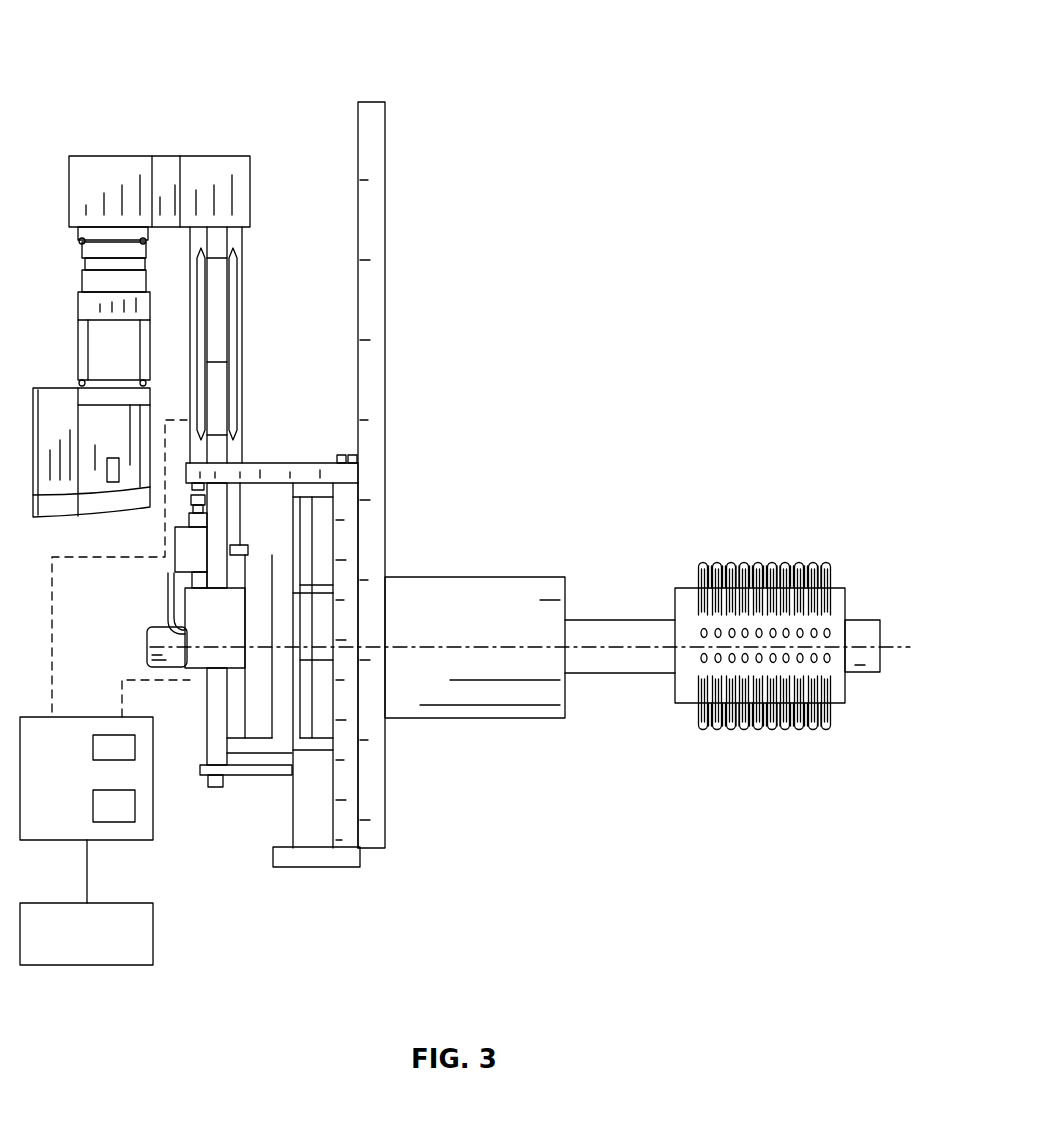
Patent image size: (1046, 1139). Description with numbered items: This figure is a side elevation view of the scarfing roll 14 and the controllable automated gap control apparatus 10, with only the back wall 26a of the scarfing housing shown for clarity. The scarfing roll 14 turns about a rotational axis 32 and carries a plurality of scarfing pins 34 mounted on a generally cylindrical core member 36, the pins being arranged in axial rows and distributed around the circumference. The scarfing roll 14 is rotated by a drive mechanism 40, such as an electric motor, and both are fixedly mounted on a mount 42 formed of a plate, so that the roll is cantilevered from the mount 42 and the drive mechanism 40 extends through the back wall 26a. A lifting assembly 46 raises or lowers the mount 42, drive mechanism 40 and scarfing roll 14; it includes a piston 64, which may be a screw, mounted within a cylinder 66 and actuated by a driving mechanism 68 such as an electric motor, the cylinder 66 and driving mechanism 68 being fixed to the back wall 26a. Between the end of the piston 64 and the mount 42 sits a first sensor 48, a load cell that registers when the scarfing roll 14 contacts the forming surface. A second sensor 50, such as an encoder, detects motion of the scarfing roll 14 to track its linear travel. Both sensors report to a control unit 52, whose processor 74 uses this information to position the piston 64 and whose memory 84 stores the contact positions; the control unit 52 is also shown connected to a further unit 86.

The controllable automated gap control apparatus 10 is at (91, 70).
The scarfing roll 14 is at (792, 648).
The back wall 26a is at (382, 118).
The rotational axis 32 is at (882, 645).
The scarfing pins 34 is at (698, 580).
The core member 36 is at (838, 690).
The drive mechanism 40 is at (487, 573).
The mount 42 is at (318, 842).
The lifting assembly 46 is at (48, 522).
The first sensor 48 is at (182, 644).
The second sensor 50 is at (122, 468).
The control unit 52 is at (78, 842).
The piston 64 is at (240, 512).
The cylinder 66 is at (220, 284).
The driving mechanism 68 is at (76, 276).
The processor 74 is at (104, 735).
The memory 84 is at (140, 808).
The user interface 86 is at (78, 968).